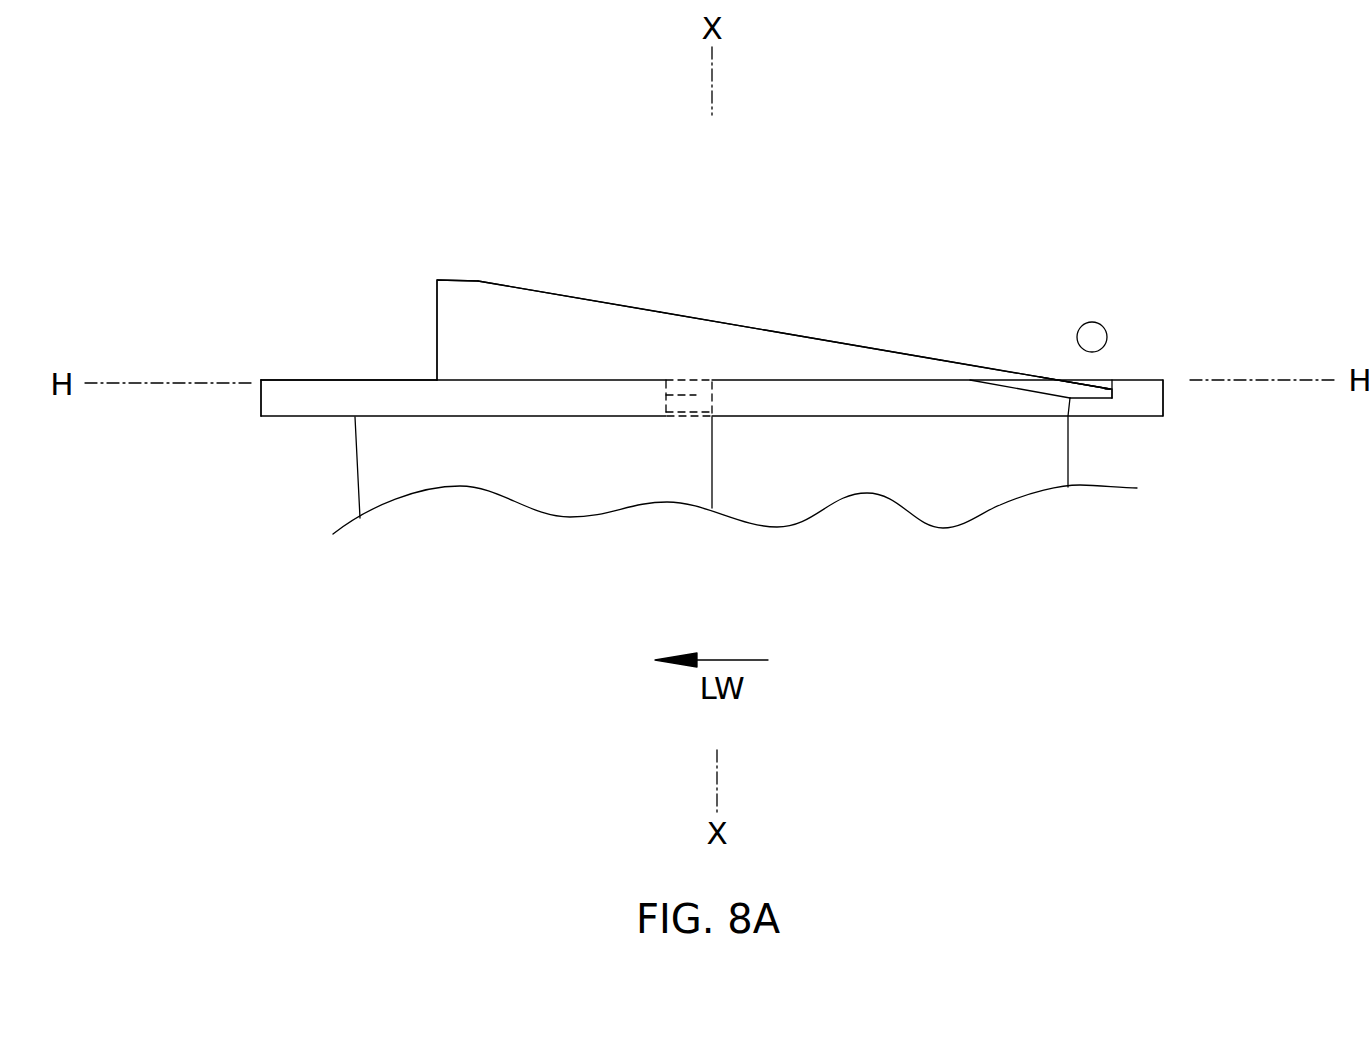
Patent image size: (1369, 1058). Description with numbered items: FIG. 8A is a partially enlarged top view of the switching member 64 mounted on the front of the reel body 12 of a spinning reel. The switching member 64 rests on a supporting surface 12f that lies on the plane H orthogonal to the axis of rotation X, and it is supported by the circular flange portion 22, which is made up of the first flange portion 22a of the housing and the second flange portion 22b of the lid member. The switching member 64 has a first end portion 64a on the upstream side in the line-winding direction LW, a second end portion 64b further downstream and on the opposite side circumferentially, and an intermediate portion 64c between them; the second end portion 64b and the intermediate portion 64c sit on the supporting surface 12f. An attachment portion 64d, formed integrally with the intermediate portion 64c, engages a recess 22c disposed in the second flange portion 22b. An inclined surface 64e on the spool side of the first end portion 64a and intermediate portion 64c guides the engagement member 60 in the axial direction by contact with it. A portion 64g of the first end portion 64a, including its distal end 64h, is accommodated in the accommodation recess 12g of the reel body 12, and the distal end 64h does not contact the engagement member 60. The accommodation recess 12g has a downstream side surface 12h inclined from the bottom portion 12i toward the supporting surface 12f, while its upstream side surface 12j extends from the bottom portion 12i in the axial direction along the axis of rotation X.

The reel body 12 is at (482, 508).
The supporting surface 12f is at (351, 380).
The accommodation recess 12g is at (1037, 378).
The side surface 12h is at (1018, 388).
The bottom portion 12i is at (1082, 380).
The side surface 12j is at (1093, 398).
The flange portion 22 is at (392, 428).
The first flange portion 22a is at (1147, 403).
The second flange portion 22b is at (285, 402).
The recess 22c is at (693, 396).
The engagement member 60 is at (1098, 335).
The switching member 64 is at (692, 288).
The first end portion 64a is at (1048, 358).
The second end portion 64b is at (455, 300).
The intermediate portion 64c is at (600, 310).
The attachment portion 64d is at (700, 400).
The inclined surface 64e is at (757, 326).
The portion 64g is at (1060, 372).
The distal end 64h is at (1105, 398).